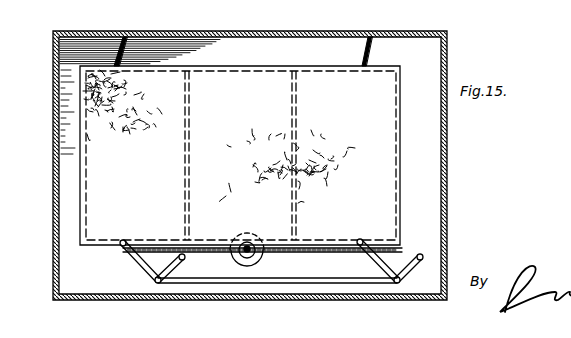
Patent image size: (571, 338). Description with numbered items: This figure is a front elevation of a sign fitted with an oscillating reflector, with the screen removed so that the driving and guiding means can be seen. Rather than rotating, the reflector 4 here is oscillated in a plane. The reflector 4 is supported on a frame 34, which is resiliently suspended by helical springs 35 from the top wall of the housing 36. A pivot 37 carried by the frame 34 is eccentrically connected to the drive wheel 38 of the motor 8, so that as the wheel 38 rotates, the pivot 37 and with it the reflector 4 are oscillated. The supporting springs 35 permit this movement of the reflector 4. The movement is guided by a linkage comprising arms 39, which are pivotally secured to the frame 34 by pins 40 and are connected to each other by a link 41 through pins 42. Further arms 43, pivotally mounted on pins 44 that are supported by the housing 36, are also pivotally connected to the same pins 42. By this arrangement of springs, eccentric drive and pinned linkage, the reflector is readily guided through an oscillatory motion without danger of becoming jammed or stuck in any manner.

The reflector 4 is at (382, 142).
The motor 8 is at (258, 265).
The frame 34 is at (191, 93).
The helical springs 35 is at (128, 41).
The housing 36 is at (235, 32).
The pivot 37 is at (247, 248).
The drive wheel 38 is at (250, 267).
The arms 39 is at (137, 258).
The pins 40 is at (123, 242).
The link 41 is at (225, 284).
The pins 42 is at (158, 283).
The arms 43 is at (173, 272).
The pins 44 is at (182, 254).